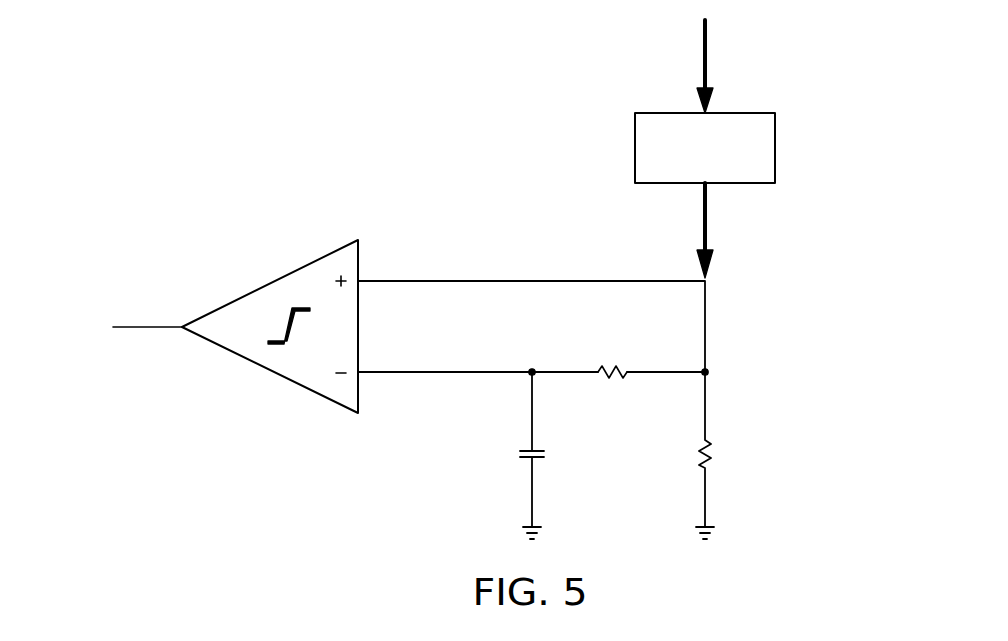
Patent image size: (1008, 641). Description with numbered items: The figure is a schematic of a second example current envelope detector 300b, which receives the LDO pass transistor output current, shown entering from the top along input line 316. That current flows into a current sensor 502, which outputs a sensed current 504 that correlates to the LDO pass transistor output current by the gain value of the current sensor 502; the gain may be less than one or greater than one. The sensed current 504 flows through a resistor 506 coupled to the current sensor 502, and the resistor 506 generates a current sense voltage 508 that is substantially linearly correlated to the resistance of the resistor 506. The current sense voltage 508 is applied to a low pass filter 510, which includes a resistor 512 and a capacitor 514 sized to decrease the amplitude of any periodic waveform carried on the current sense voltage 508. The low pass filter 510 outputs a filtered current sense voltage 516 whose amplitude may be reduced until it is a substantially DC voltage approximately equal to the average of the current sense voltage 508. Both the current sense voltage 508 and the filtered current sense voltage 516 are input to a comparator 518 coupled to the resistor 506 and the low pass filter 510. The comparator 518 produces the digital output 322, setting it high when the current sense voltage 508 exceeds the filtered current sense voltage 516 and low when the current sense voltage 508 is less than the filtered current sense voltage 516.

The current envelope detector 300b is at (447, 77).
The current input 316 is at (709, 53).
The current sensor 502 is at (778, 143).
The sensed current 504 is at (701, 217).
The current sense voltage 508 is at (446, 279).
The low pass filter 510 is at (571, 346).
The resistor 512 is at (615, 376).
The capacitor 514 is at (545, 455).
The resistor 506 is at (712, 458).
The filtered current sense voltage 516 is at (447, 375).
The comparator 518 is at (270, 375).
The digital output 322 is at (148, 331).